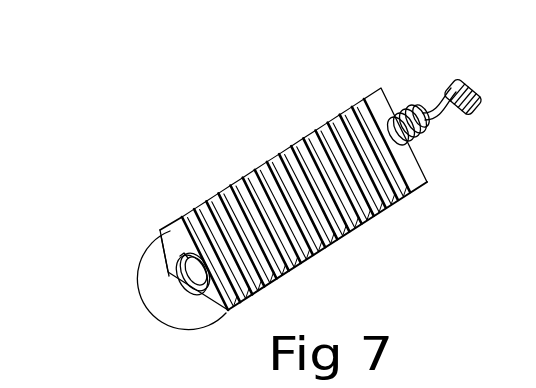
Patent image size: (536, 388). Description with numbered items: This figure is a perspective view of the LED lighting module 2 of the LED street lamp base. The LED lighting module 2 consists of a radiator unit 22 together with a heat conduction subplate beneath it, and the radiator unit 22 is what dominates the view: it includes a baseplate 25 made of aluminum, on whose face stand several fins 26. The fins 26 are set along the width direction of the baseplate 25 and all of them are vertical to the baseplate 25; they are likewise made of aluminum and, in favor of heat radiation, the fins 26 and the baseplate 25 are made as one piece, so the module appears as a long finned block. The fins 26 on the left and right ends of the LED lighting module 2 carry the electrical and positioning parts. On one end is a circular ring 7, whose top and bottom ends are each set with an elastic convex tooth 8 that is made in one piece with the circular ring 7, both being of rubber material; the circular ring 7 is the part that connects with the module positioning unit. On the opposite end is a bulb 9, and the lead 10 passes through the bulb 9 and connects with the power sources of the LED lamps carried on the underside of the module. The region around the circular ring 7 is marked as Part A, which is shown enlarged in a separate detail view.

The LED lighting module 2 is at (273, 185).
The circular ring 7 is at (170, 273).
The elastic convex tooth 8 is at (160, 229).
The bulb 9 is at (400, 118).
The lead 10 is at (436, 94).
The radiator unit 22 is at (158, 246).
The baseplate 25 is at (345, 234).
The fins 26 is at (184, 215).
The Part A is at (142, 297).